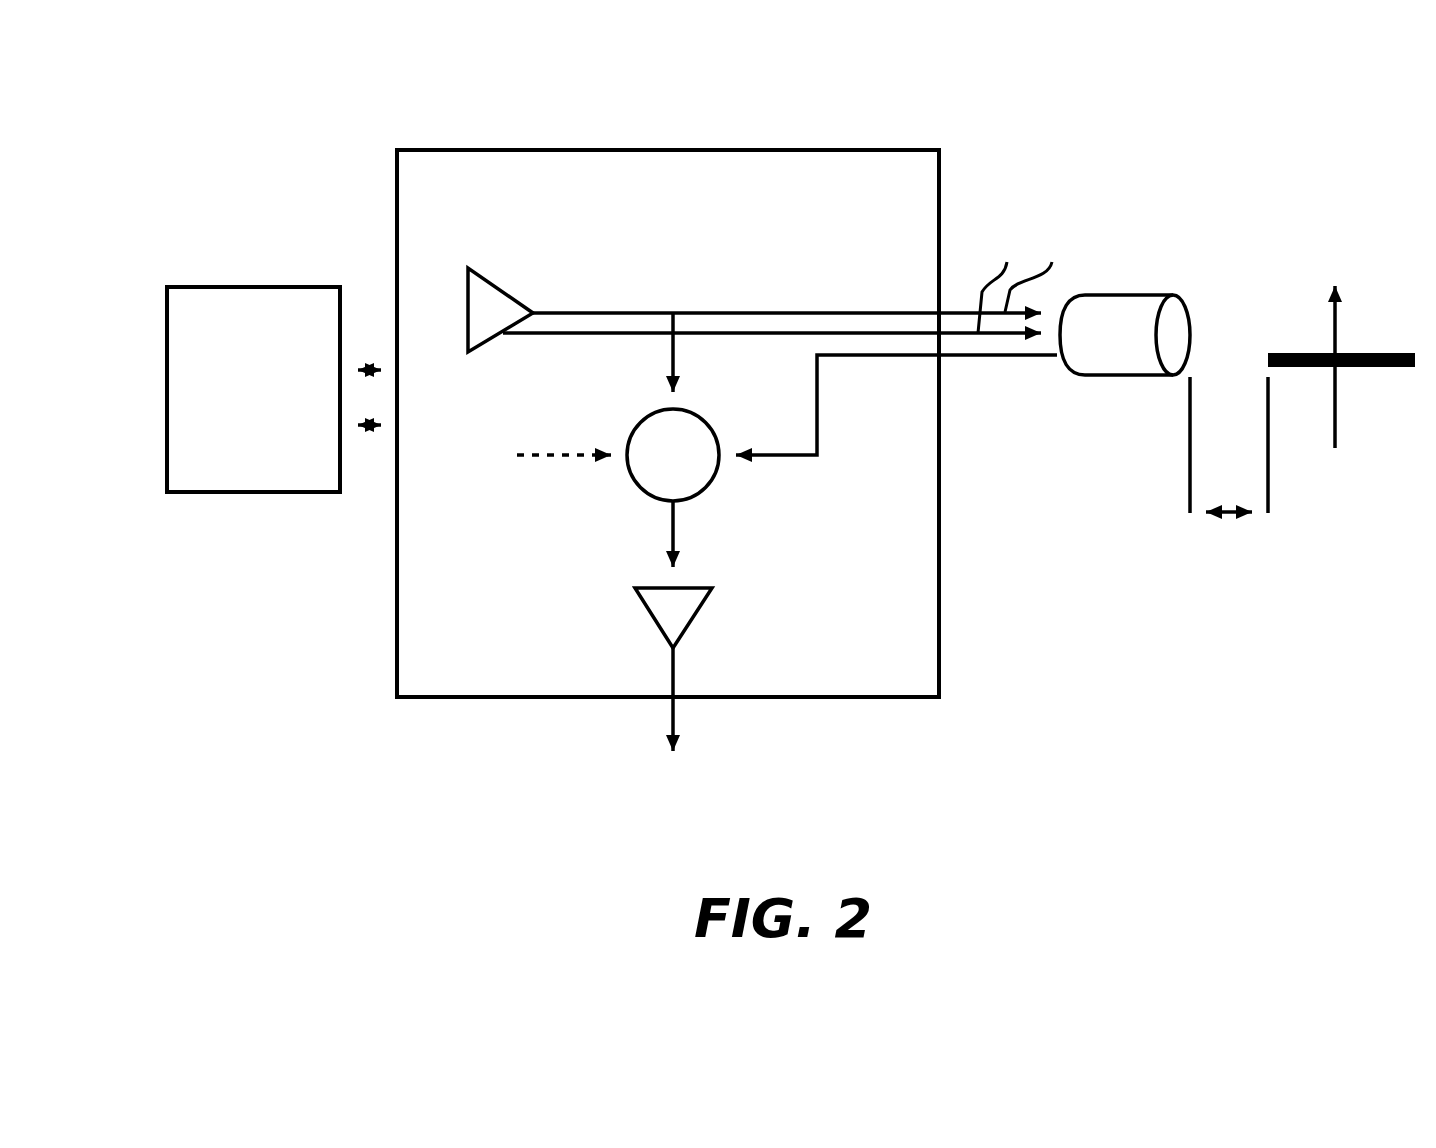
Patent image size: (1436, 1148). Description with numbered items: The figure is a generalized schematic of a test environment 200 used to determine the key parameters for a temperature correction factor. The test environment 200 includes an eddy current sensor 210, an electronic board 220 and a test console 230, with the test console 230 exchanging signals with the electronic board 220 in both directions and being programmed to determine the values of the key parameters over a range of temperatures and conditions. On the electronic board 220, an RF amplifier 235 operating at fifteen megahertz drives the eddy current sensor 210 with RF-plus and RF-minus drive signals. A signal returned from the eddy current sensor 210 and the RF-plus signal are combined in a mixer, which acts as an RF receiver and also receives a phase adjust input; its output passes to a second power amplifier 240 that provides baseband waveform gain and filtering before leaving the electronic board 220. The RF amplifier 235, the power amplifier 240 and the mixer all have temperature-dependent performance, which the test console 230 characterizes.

The test environment 200 is at (723, 89).
The eddy current sensor 210 is at (1159, 293).
The electronic board 220 is at (940, 560).
The test console 230 is at (211, 287).
The RF amplifier 235 is at (500, 291).
The power amplifier 240 is at (692, 618).